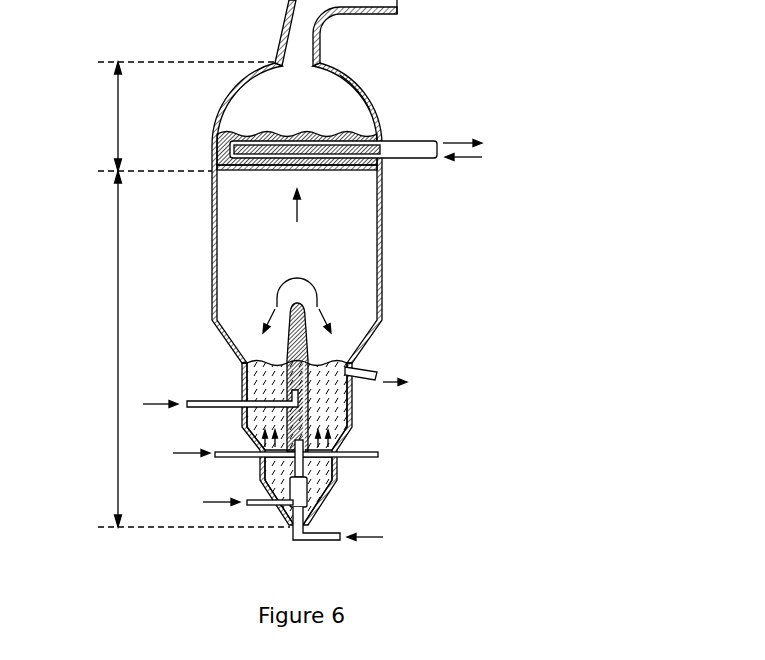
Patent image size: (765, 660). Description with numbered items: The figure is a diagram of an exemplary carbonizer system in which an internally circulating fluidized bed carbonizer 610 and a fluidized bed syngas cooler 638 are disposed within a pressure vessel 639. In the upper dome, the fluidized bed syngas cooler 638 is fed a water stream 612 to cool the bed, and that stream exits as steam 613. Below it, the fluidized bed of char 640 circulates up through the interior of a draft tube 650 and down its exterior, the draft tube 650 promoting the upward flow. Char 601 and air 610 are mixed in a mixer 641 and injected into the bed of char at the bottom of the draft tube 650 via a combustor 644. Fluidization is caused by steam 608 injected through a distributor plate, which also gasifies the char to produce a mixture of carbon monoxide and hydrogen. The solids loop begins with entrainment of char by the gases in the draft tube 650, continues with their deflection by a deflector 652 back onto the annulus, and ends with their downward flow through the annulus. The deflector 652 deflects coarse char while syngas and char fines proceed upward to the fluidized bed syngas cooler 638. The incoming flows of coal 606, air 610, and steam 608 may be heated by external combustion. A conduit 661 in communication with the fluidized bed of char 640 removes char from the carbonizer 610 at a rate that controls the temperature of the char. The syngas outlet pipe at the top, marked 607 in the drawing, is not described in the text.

The char 601 is at (367, 540).
The coal 606 is at (155, 406).
The syngas outlet pipe 607 is at (435, 0).
The steam 608 is at (185, 458).
The internally circulating fluidized bed carbonizer 610 is at (117, 350).
The water stream 612 is at (463, 160).
The steam 613 is at (458, 141).
The fluidized bed syngas cooler 638 is at (356, 122).
The pressure vessel 639 is at (362, 86).
The fluidized bed of char 640 is at (347, 400).
The mixer 641 is at (287, 492).
The combustor 644 is at (307, 481).
The draft tube 650 is at (292, 395).
The deflector 652 is at (312, 281).
The conduit 661 is at (370, 370).